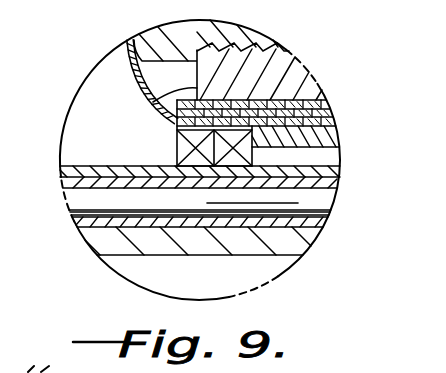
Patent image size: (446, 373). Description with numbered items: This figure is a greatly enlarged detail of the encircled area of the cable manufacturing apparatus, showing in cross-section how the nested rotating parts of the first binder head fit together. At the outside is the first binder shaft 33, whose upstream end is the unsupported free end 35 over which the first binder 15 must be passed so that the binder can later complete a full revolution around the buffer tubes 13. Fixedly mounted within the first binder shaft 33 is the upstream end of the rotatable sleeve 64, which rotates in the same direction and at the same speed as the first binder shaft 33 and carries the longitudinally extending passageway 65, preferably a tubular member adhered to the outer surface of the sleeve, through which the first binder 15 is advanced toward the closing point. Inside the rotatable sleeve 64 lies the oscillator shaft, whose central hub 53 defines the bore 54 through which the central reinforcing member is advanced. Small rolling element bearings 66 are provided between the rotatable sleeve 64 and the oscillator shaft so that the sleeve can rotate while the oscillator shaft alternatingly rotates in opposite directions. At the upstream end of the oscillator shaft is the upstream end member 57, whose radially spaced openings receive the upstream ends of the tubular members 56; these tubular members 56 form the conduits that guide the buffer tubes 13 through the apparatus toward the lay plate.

The buffer tube 13 is at (80, 200).
The first binder 15 is at (126, 70).
The first binder shaft 33 is at (302, 92).
The upstream free end 35 is at (146, 112).
The central hub 53 is at (300, 238).
The bore 54 is at (268, 262).
The tubular member 56 is at (316, 212).
The upstream end member 57 is at (126, 167).
The rotatable sleeve 64 is at (333, 145).
The passageway 65 is at (328, 100).
The rolling element bearing 66 is at (70, 205).